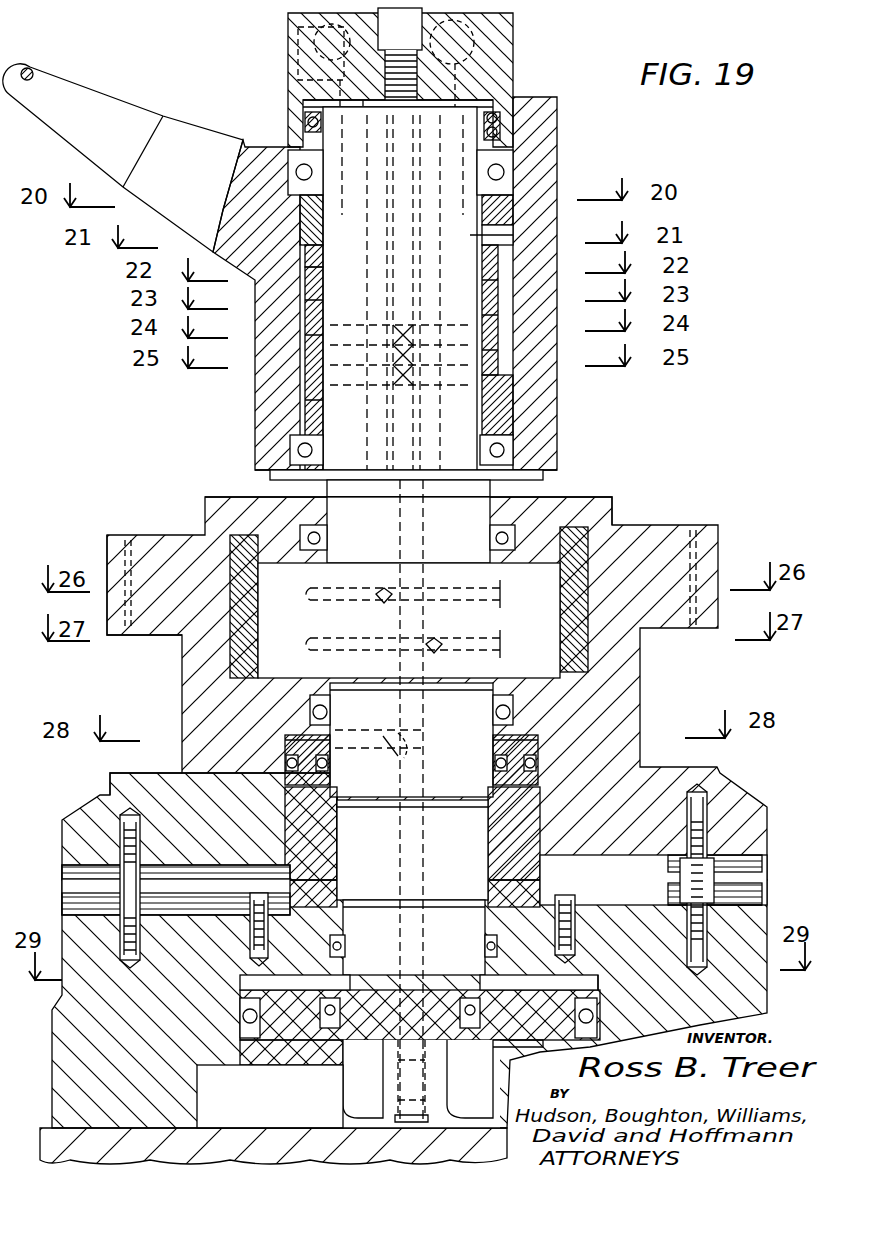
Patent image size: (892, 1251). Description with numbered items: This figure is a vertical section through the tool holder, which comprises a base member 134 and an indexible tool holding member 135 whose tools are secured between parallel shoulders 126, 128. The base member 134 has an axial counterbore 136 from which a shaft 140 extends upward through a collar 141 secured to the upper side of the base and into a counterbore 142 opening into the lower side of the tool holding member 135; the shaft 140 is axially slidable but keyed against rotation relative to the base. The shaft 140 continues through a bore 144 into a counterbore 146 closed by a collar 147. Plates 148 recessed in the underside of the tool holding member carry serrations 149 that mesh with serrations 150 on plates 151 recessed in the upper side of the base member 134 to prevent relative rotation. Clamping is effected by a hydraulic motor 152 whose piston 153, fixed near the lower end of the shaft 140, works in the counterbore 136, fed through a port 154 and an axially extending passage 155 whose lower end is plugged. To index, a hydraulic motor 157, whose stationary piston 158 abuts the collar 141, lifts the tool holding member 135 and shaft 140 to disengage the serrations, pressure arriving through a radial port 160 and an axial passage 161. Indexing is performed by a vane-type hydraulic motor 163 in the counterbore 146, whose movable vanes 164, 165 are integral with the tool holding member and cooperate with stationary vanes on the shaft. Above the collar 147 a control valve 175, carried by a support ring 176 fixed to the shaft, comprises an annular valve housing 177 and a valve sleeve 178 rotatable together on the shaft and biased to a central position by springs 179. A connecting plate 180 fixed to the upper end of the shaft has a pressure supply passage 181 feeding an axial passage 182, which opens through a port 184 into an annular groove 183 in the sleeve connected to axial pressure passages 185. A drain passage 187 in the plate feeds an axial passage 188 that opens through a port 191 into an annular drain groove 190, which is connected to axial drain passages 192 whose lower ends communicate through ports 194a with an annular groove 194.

The upper shoulder 126 is at (140, 640).
The shoulder 128 is at (126, 776).
The base member 134 is at (197, 1101).
The tool holding member 135 is at (68, 814).
The axial counterbore 136 is at (244, 988).
The shaft 140 is at (515, 702).
The collar 141 is at (540, 814).
The counterbore 142 is at (290, 816).
The bore 144 is at (346, 668).
The counterbore 146 is at (565, 588).
The collar 147 is at (608, 503).
The plates 148 is at (766, 838).
The serrations 149 is at (766, 864).
The serrations 150 is at (766, 888).
The plates 151 is at (766, 908).
The hydraulic motor 152 is at (242, 1018).
The piston 153 is at (580, 994).
The port 154 is at (480, 988).
The axially extending passage 155 is at (425, 950).
The hydraulic motor 157 is at (551, 747).
The piston 158 is at (538, 782).
The radial port 160 is at (422, 736).
The axially extending passage 161 is at (420, 758).
The vane-type hydraulic motor 163 is at (262, 656).
The movable vane 164 is at (258, 592).
The movable vane 165 is at (440, 622).
The control valve 175 is at (248, 431).
The support ring 176 is at (300, 478).
The annular valve housing 177 is at (557, 424).
The valve sleeve 178 is at (545, 156).
The springs 179 is at (300, 124).
The connecting plate 180 is at (515, 62).
The pressure supply passage 181 is at (505, 20).
The axially extending passage 182 is at (300, 60).
The annular groove 183 is at (515, 236).
The port 184 is at (540, 195).
The axially extending passages 185 is at (500, 314).
The drain passage 187 is at (288, 42).
The axially extending passage 188 is at (300, 100).
The annular drain groove 190 is at (300, 212).
The port 191 is at (328, 226).
The axially extending passages 192 is at (308, 300).
The annular groove 194 is at (490, 413).
The ports 194a is at (323, 413).